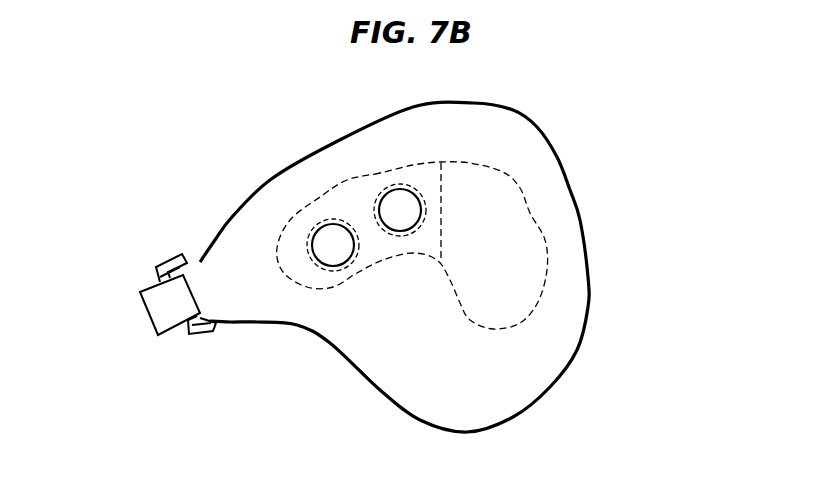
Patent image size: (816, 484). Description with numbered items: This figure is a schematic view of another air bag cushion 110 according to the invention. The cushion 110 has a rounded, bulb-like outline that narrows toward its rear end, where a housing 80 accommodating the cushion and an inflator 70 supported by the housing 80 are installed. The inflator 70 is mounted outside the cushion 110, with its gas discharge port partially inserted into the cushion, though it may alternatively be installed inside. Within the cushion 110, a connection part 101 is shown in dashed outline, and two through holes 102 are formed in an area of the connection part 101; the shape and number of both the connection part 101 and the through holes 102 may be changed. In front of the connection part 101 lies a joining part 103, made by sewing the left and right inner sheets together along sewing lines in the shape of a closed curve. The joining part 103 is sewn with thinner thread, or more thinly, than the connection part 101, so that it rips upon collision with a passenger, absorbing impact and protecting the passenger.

The air bag cushion 110 is at (600, 253).
The connection part 101 is at (377, 173).
The through holes 102 is at (327, 242).
The joining part 103 is at (518, 188).
The inflator 70 is at (157, 313).
The housing 80 is at (202, 340).